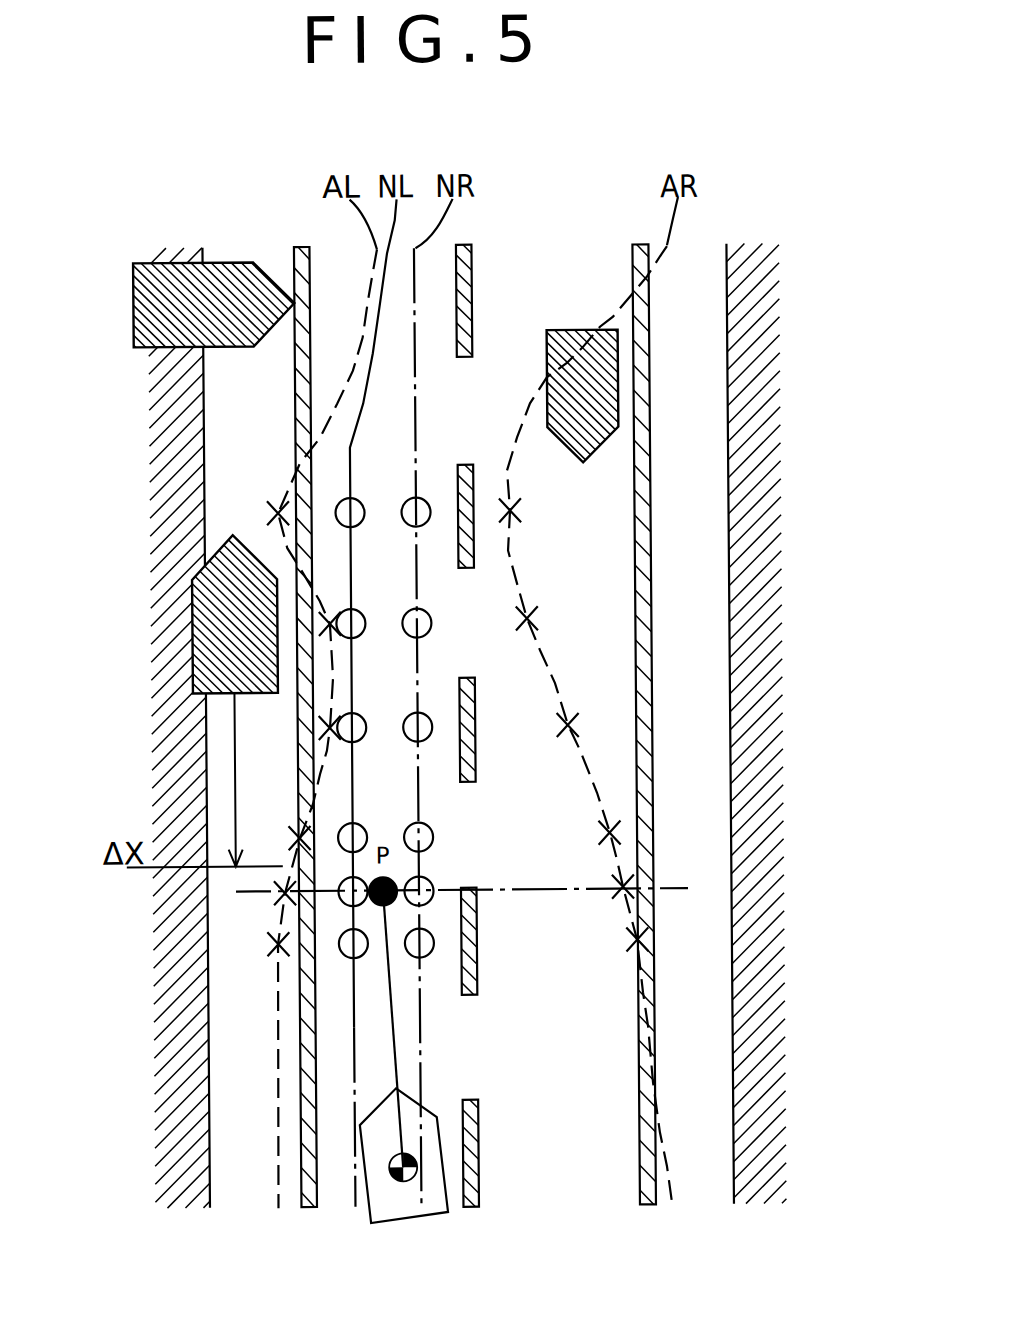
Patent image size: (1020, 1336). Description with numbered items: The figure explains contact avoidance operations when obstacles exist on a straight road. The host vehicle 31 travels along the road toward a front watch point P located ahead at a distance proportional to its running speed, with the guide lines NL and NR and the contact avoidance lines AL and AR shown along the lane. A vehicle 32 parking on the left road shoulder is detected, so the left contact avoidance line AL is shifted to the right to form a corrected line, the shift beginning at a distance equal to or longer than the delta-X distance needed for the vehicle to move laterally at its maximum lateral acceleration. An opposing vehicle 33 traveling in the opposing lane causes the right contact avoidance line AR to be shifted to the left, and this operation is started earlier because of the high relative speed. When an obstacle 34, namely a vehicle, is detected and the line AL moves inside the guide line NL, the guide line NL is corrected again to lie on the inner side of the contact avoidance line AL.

The vehicle 31 is at (428, 1111).
The vehicle parking on the road shoulder 32 is at (200, 581).
The opposing vehicle 33 is at (552, 368).
The obstacle 34 is at (152, 322).